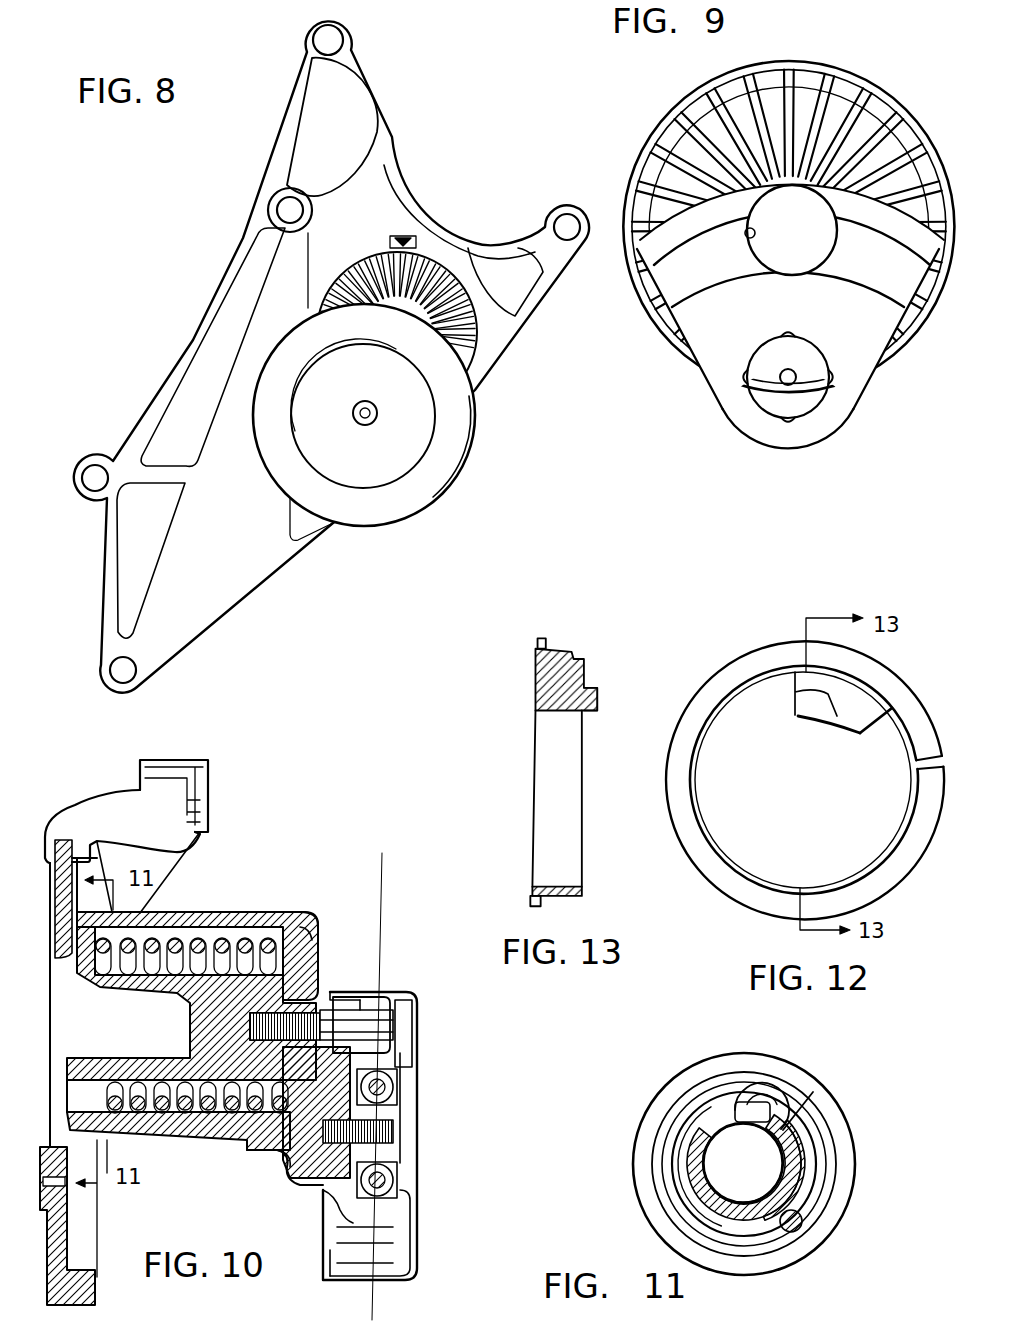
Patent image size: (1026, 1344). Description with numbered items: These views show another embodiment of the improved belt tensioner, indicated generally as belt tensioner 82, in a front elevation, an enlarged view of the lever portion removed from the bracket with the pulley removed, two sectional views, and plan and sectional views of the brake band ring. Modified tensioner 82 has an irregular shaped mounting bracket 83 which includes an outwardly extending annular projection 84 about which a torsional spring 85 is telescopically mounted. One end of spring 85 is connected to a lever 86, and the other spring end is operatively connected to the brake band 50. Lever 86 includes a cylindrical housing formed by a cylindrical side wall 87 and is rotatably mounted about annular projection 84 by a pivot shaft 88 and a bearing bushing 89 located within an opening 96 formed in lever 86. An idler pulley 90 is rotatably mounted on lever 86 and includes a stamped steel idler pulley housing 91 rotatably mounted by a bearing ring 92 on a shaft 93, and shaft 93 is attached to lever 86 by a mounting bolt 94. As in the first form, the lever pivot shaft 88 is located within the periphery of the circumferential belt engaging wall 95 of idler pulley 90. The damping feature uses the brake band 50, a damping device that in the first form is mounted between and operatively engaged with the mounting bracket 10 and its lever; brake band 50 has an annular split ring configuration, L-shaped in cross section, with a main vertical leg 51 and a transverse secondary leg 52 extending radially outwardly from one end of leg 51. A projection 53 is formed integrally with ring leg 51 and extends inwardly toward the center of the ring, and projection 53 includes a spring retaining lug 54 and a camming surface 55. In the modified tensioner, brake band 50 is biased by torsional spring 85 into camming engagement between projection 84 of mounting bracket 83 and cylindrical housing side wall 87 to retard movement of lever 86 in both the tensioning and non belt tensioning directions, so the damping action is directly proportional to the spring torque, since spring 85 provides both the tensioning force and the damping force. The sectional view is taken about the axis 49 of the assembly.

In FIG. 8, the mounting bracket 10 is at (331, 356).
In FIG. 10, the pivot axis 49 is at (385, 888).
In FIG. 13, the brake band damping device 50 is at (567, 751).
In FIG. 12, the brake band damping device 50 is at (805, 766).
In FIG. 11, the brake band damping device 50 is at (840, 1143).
In FIG. 10, the brake band damping device 50 is at (55, 958).
In FIG. 13, the main vertical leg 51 is at (553, 877).
In FIG. 13, the transverse secondary leg 52 is at (533, 641).
In FIG. 13, the projection 53 is at (597, 690).
In FIG. 12, the projection 53 is at (853, 732).
In FIG. 11, the projection 53 is at (802, 1092).
In FIG. 13, the spring retaining lug 54 is at (592, 708).
In FIG. 12, the spring retaining lug 54 is at (813, 705).
In FIG. 11, the spring retaining lug 54 is at (743, 1163).
In FIG. 12, the camming surface 55 is at (795, 691).
In FIG. 11, the camming surface 55 is at (735, 1110).
In FIG. 8, the belt tensioner 82 is at (531, 336).
In FIG. 10, the belt tensioner 82 is at (250, 861).
In FIG. 8, the mounting bracket 83 is at (238, 249).
In FIG. 10, the mounting bracket 83 is at (102, 798).
In FIG. 11, the annular projection 84 is at (793, 1173).
In FIG. 10, the annular projection 84 is at (203, 998).
In FIG. 11, the torsional spring 85 is at (698, 1097).
In FIG. 10, the torsional spring 85 is at (317, 930).
In FIG. 9, the lever 86 is at (668, 352).
In FIG. 10, the lever 86 is at (317, 913).
In FIG. 9, the cylindrical side wall 87 is at (861, 74).
In FIG. 11, the cylindrical side wall 87 is at (813, 1237).
In FIG. 10, the cylindrical side wall 87 is at (180, 915).
In FIG. 10, the pivot shaft 88 is at (367, 997).
In FIG. 10, the bearing bushing 89 is at (360, 987).
In FIG. 8, the idler pulley 90 is at (450, 487).
In FIG. 10, the idler pulley 90 is at (420, 1215).
In FIG. 10, the idler pulley housing 91 is at (413, 1010).
In FIG. 10, the bearing ring 92 is at (400, 1078).
In FIG. 9, the shaft 93 is at (810, 392).
In FIG. 10, the shaft 93 is at (405, 1113).
In FIG. 8, the mounting bolt 94 is at (377, 418).
In FIG. 10, the mounting bolt 94 is at (290, 1164).
In FIG. 10, the circumferential belt engaging wall 95 is at (333, 1263).
In FIG. 9, the opening 96 is at (748, 234).
In FIG. 10, the opening 96 is at (397, 1040).